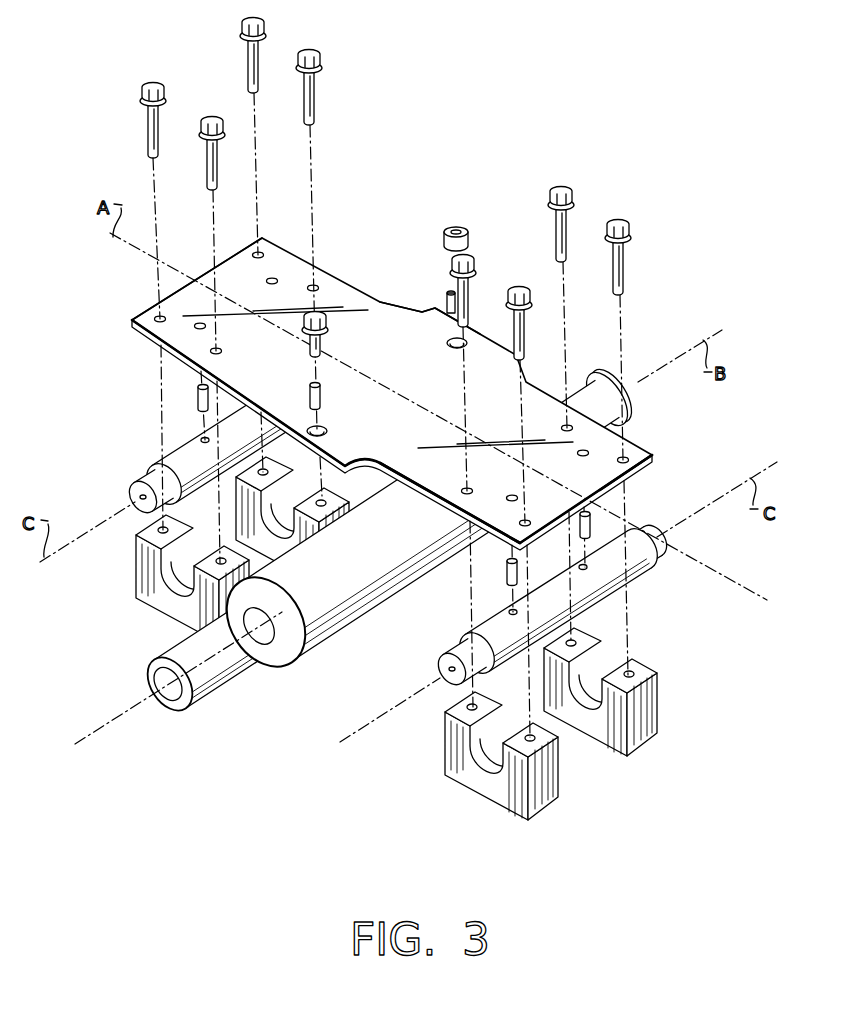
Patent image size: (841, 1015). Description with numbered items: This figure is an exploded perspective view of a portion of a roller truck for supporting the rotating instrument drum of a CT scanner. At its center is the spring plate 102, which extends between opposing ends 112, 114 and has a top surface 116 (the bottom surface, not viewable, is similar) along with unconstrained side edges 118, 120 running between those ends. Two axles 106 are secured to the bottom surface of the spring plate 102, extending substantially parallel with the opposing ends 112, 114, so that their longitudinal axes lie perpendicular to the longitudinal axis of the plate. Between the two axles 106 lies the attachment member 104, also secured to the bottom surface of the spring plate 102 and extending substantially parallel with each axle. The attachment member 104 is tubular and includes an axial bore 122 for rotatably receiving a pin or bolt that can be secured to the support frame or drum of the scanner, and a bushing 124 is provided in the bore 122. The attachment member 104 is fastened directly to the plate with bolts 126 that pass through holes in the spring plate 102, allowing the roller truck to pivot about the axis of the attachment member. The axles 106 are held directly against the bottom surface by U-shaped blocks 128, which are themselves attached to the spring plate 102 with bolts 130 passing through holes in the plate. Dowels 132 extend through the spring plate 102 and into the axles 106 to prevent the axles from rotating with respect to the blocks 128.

The spring plate 102 is at (422, 381).
The attachment member 104 is at (335, 615).
The axle 106 is at (162, 458).
The opposing end 112 is at (233, 257).
The opposing end 114 is at (654, 461).
The top surface 116 is at (412, 322).
The side edge 118 is at (434, 497).
The side edge 120 is at (342, 270).
The axial bore 122 is at (270, 645).
The bushing 124 is at (204, 690).
The bolt 126 is at (450, 228).
The U-shaped block 128 is at (137, 597).
The bolt 130 is at (260, 50).
The dowel 132 is at (197, 400).